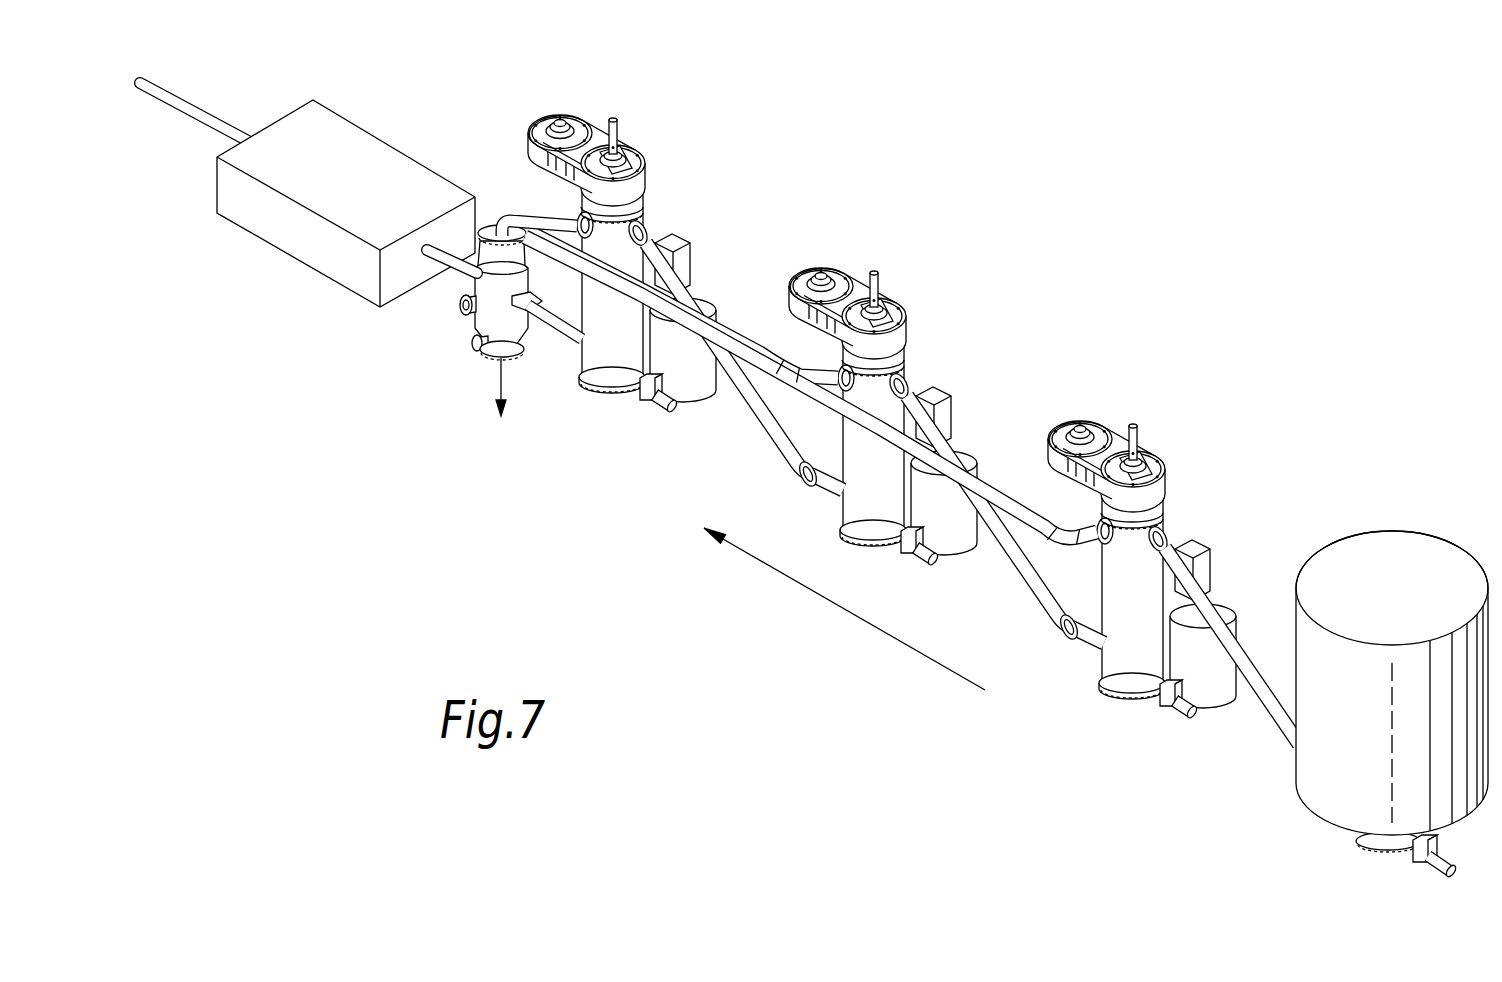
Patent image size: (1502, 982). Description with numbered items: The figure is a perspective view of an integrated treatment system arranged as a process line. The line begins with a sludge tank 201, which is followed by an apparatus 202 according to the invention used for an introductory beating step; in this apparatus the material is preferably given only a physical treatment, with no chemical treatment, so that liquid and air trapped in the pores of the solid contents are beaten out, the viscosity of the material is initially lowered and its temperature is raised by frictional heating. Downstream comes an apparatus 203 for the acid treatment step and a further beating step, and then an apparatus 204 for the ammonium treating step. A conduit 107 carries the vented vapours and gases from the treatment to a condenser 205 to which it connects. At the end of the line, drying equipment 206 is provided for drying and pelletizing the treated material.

The conduit 107 is at (586, 241).
The sludge tank 201 is at (1414, 545).
The apparatus for introductory beating step 202 is at (1177, 453).
The apparatus for acid treatment step and beating step 203 is at (915, 302).
The apparatus for ammonium treating step 204 is at (655, 149).
The condenser 205 is at (474, 328).
The drying equipment 206 is at (367, 151).